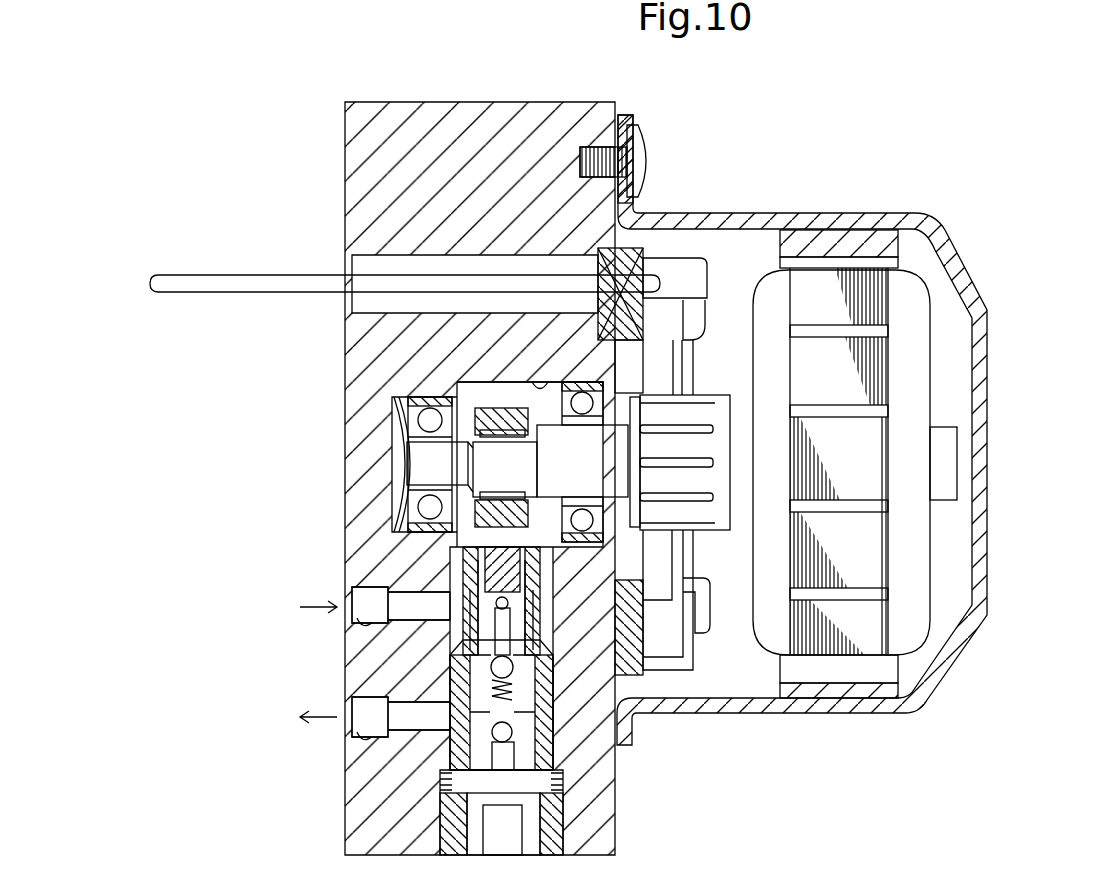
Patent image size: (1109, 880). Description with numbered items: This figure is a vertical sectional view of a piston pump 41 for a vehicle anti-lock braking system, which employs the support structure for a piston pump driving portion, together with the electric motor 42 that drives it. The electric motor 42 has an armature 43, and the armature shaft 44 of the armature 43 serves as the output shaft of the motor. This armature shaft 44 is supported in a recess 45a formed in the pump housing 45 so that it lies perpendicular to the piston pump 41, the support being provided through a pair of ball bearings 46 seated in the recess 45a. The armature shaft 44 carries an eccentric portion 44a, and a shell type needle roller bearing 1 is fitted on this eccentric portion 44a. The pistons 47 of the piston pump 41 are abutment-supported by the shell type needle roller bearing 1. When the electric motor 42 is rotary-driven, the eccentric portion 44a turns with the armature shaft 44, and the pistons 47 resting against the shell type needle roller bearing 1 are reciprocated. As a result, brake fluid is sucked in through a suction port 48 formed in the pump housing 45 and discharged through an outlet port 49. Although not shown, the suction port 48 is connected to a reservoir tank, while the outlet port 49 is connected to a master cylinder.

The shell type needle roller bearing 1 is at (459, 424).
The piston pump 41 is at (451, 443).
The electric motor 42 is at (806, 201).
The armature 43 is at (915, 468).
The armature shaft 44 is at (580, 440).
The eccentric portion 44a is at (497, 470).
The pump housing 45 is at (425, 128).
The recess 45a is at (553, 377).
The ball bearings 46 is at (585, 382).
The pistons 47 is at (480, 537).
The suction port 48 is at (350, 637).
The outlet port 49 is at (350, 747).